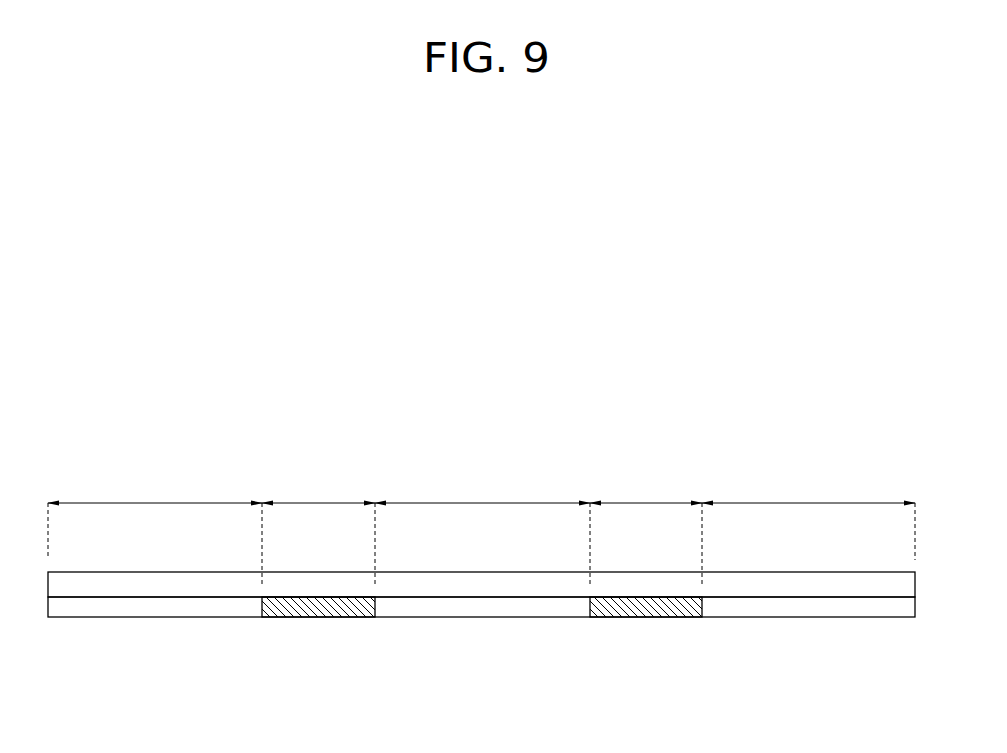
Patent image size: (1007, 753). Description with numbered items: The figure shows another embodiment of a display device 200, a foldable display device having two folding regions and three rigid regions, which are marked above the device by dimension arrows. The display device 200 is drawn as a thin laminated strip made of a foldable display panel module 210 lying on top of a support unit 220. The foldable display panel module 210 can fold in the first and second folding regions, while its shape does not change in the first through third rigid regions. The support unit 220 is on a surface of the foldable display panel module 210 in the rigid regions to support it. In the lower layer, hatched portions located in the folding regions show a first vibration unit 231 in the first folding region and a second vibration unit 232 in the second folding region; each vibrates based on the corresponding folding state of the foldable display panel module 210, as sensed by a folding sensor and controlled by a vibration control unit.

The display device 200 is at (572, 410).
The foldable display panel module 210 is at (907, 583).
The support unit 220 is at (907, 605).
The first vibration unit 231 is at (320, 613).
The second vibration unit 232 is at (645, 613).